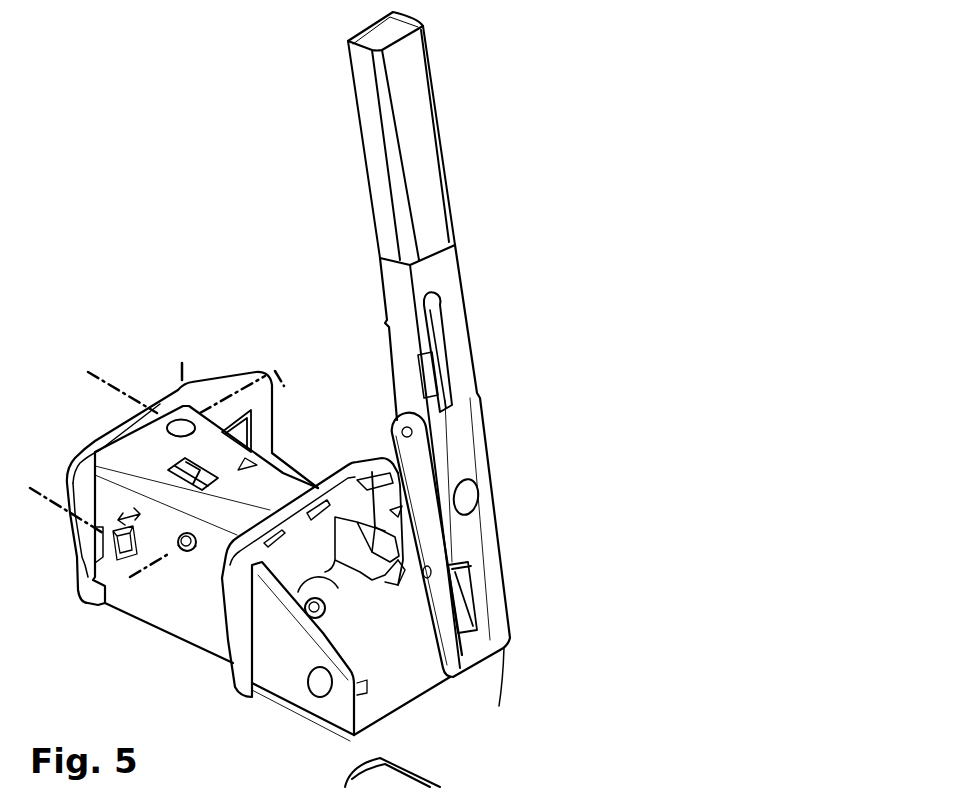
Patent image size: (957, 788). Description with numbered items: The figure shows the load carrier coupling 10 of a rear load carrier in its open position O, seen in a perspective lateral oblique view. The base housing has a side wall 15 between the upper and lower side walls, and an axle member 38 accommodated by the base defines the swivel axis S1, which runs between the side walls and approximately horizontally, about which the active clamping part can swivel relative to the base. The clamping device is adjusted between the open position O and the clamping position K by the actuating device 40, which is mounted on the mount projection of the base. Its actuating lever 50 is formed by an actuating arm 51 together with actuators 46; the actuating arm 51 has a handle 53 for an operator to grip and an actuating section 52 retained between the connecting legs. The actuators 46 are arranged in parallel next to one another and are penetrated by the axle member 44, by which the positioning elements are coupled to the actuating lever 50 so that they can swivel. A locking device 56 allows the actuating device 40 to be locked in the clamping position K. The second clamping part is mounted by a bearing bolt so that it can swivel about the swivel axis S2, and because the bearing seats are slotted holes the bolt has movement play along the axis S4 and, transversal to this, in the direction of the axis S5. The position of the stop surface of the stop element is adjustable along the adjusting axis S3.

The load carrier coupling 10 is at (777, 187).
The side wall 15 is at (197, 630).
The axle member 38 is at (205, 532).
The actuating device 40 is at (367, 655).
The axle member 44 is at (310, 612).
The actuators 46 is at (417, 663).
The actuating lever 50 is at (446, 150).
The actuating arm 51 is at (387, 283).
The actuating section 52 is at (470, 433).
The handle 53 is at (445, 213).
The locking device 56 is at (447, 350).
The swivel axis S1 is at (167, 557).
The swivel axis S2 is at (182, 368).
The adjusting axis S3 is at (62, 502).
The axis S4 is at (110, 386).
The axis S5 is at (260, 396).
The open position O is at (523, 563).
The clamping position K is at (810, 787).